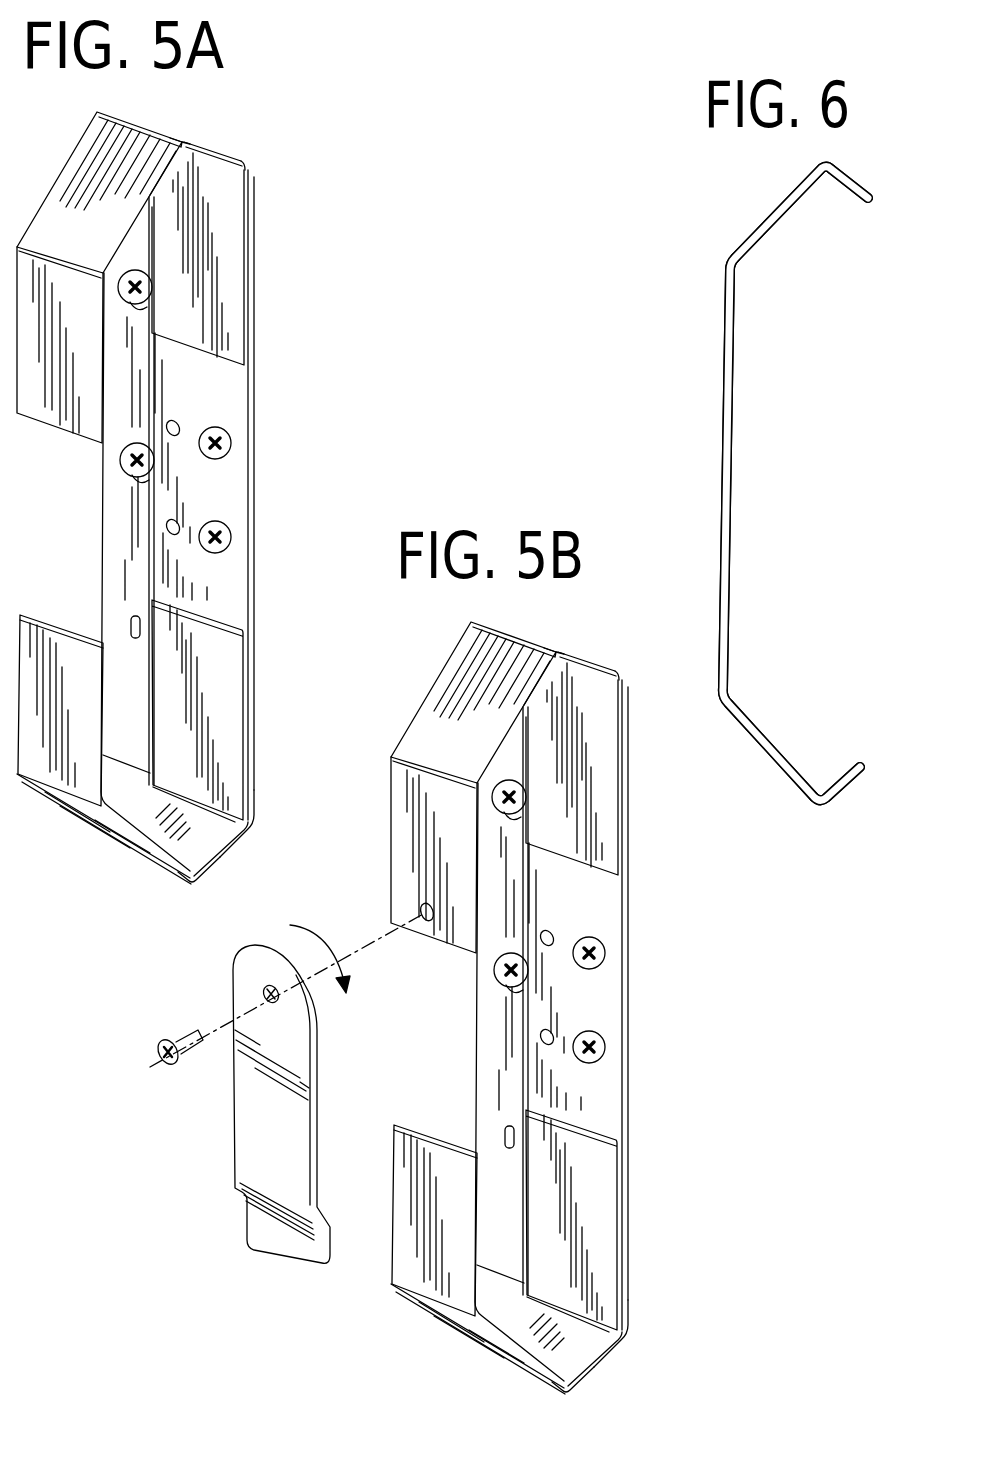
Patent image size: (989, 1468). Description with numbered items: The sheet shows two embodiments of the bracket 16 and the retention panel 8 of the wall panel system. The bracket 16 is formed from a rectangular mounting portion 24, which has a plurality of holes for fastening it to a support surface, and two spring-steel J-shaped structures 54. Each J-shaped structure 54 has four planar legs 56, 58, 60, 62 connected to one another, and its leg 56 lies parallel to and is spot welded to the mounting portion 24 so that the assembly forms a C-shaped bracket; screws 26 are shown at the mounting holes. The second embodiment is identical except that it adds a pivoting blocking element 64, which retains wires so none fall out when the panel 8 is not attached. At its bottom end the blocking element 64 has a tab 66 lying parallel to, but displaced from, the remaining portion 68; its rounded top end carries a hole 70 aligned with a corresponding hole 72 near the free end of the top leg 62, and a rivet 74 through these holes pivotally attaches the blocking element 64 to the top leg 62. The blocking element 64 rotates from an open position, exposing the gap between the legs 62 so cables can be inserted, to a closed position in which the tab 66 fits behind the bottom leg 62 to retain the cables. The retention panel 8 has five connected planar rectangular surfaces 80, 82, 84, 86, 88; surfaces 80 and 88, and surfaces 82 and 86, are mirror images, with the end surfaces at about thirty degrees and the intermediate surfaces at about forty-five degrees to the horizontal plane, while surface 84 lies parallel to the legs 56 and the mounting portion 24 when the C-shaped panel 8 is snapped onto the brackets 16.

In FIG. 6, the retention panel 8 is at (660, 462).
In FIG. 5A, the bracket 16 is at (272, 513).
In FIG. 5B, the bracket 16 is at (707, 1040).
In FIG. 5A, the mounting portion 24 is at (253, 455).
In FIG. 5B, the mounting portion 24 is at (624, 930).
In FIG. 5B, the screws 26 is at (600, 960).
In FIG. 5A, the J-shaped structure 54 is at (176, 136).
In FIG. 5B, the J-shaped structure 54 is at (553, 648).
In FIG. 5A, the leg 56 is at (227, 283).
In FIG. 5B, the leg 56 is at (600, 728).
In FIG. 5A, the leg 58 is at (239, 160).
In FIG. 5B, the leg 58 is at (605, 662).
In FIG. 5A, the leg 60 is at (78, 172).
In FIG. 5B, the leg 60 is at (430, 722).
In FIG. 5A, the top leg 62 is at (33, 398).
In FIG. 5B, the top leg 62 is at (400, 815).
In FIG. 5B, the blocking element 64 is at (294, 1104).
In FIG. 5B, the tab 66 is at (280, 1233).
In FIG. 5B, the remaining portion 68 is at (300, 1053).
In FIG. 5B, the hole 70 is at (265, 986).
In FIG. 5B, the hole 72 is at (425, 906).
In FIG. 5B, the rivet 74 is at (158, 1063).
In FIG. 6, the surface 80 is at (838, 785).
In FIG. 6, the surface 82 is at (753, 733).
In FIG. 6, the surface 84 is at (720, 343).
In FIG. 6, the surface 86 is at (777, 210).
In FIG. 6, the surface 88 is at (852, 180).